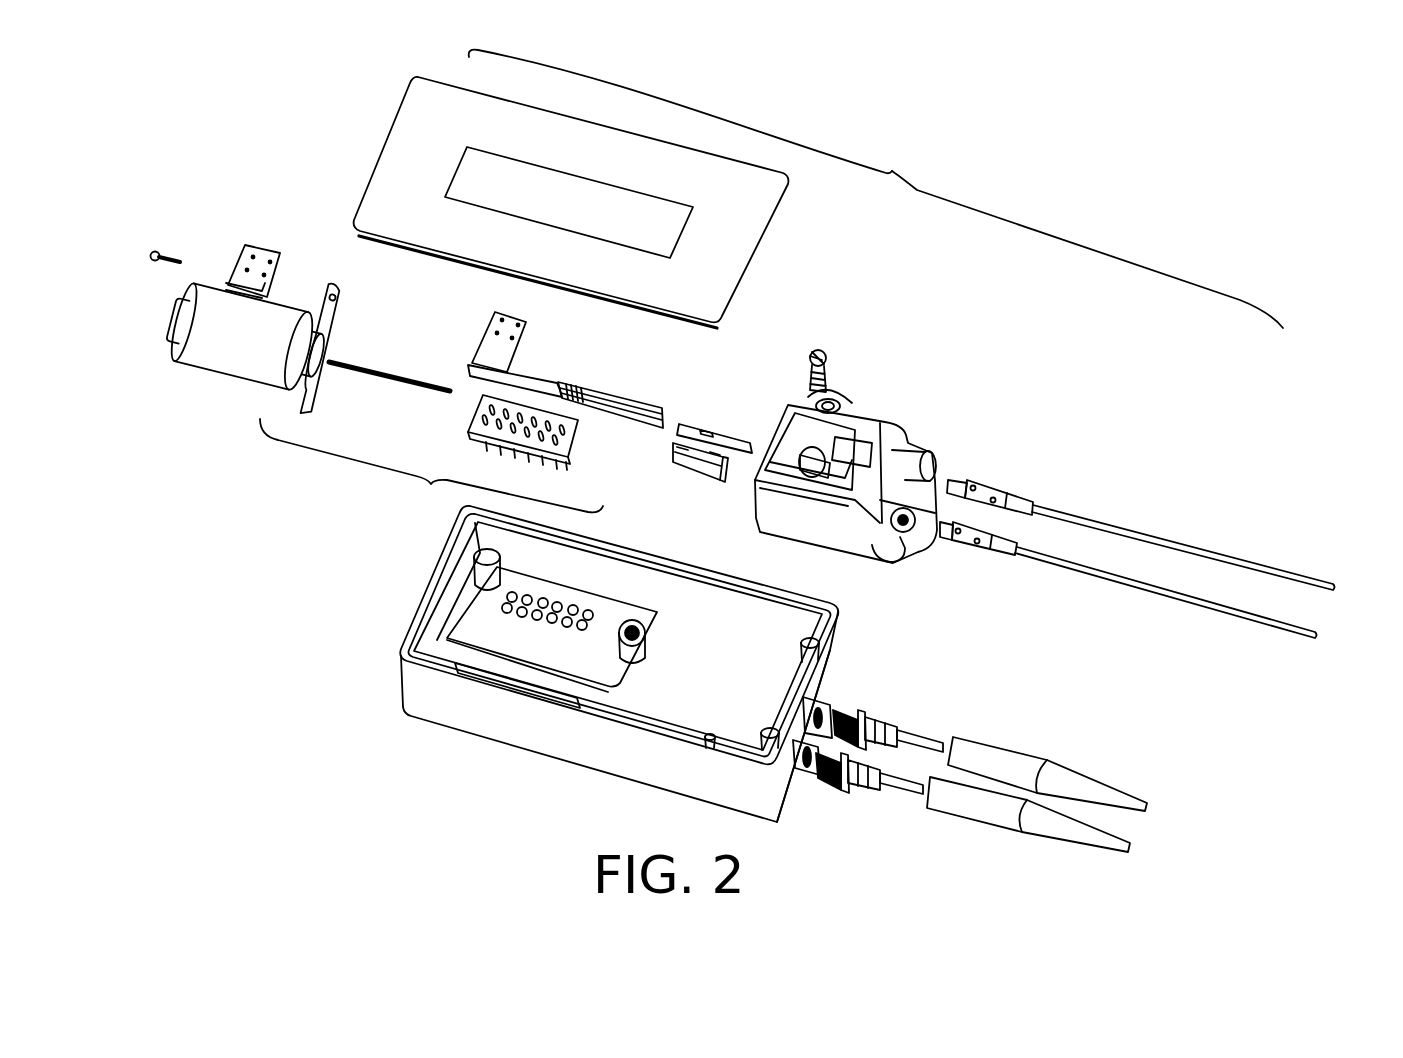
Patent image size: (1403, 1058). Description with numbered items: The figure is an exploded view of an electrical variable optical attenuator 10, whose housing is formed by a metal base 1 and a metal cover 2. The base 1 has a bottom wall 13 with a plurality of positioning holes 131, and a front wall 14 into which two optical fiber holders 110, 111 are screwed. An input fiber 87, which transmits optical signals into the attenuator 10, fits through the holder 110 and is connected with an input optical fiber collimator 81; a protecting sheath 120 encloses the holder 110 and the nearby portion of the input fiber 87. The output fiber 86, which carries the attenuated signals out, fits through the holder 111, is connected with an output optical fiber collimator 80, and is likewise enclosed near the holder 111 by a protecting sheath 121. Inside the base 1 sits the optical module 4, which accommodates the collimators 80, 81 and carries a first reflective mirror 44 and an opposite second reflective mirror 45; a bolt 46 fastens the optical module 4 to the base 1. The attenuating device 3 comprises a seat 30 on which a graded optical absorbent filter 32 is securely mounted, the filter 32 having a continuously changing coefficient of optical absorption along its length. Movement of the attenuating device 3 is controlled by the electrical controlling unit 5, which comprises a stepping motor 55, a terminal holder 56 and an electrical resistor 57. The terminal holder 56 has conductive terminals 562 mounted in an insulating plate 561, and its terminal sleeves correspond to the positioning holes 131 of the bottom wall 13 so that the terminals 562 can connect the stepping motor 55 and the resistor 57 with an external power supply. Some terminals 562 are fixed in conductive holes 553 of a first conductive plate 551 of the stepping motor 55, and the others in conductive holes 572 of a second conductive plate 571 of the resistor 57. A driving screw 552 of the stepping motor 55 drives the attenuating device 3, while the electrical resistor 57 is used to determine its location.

The electrical variable optical attenuator 10 is at (876, 189).
The cover 2 is at (750, 198).
The base 1 is at (628, 664).
The bottom wall 13 is at (473, 623).
The positioning holes 131 is at (497, 607).
The front wall 14 is at (832, 663).
The electrical controlling unit 5 is at (431, 467).
The stepping motor 55 is at (243, 391).
The first conductive plate 551 is at (243, 252).
The driving screw 552 is at (383, 363).
The conductive holes 553 is at (272, 255).
The terminal holder 56 is at (528, 445).
The insulating plate 561 is at (568, 443).
The conductive terminals 562 is at (547, 462).
The electrical resistor 57 is at (607, 388).
The second conductive plate 571 is at (512, 320).
The conductive holes 572 is at (512, 338).
The attenuating device 3 is at (714, 441).
The seat 30 is at (690, 462).
The graded optical absorbent filter 32 is at (740, 443).
The optical module 4 is at (867, 444).
The first reflective mirror 44 is at (840, 495).
The second reflective mirror 45 is at (832, 520).
The bolt 46 is at (823, 348).
The output optical fiber collimator 80 is at (962, 543).
The input optical fiber collimator 81 is at (983, 493).
The output optical fiber 86 is at (1128, 583).
The input optical fiber 87 is at (1137, 535).
The optical fiber holder 110 is at (890, 723).
The optical fiber holder 111 is at (868, 783).
The protecting sheath 120 is at (1003, 760).
The protecting sheath 121 is at (970, 810).